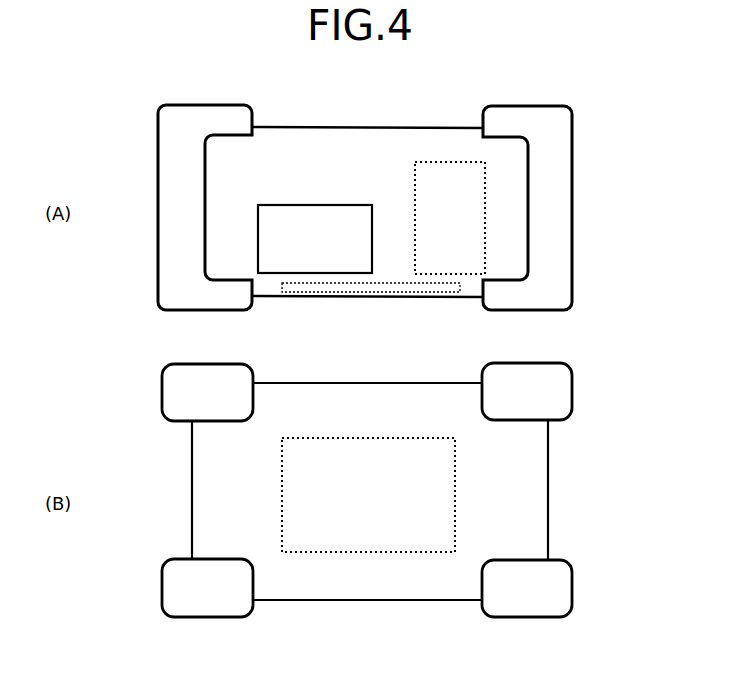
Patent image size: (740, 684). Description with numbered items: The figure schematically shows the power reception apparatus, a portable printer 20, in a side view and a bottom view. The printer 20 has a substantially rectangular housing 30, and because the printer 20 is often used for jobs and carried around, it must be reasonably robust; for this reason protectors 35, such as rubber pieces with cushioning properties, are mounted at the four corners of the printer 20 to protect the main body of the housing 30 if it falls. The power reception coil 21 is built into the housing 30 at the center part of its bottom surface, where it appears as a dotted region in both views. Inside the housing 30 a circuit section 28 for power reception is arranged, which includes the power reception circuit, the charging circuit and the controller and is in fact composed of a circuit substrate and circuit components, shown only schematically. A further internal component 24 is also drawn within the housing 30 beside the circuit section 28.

The printer 20 is at (600, 165).
The power reception coil 21 is at (313, 300).
The battery 24 is at (330, 230).
The circuit section 28 is at (445, 161).
The housing 30 is at (308, 127).
The protectors 35 is at (167, 270).